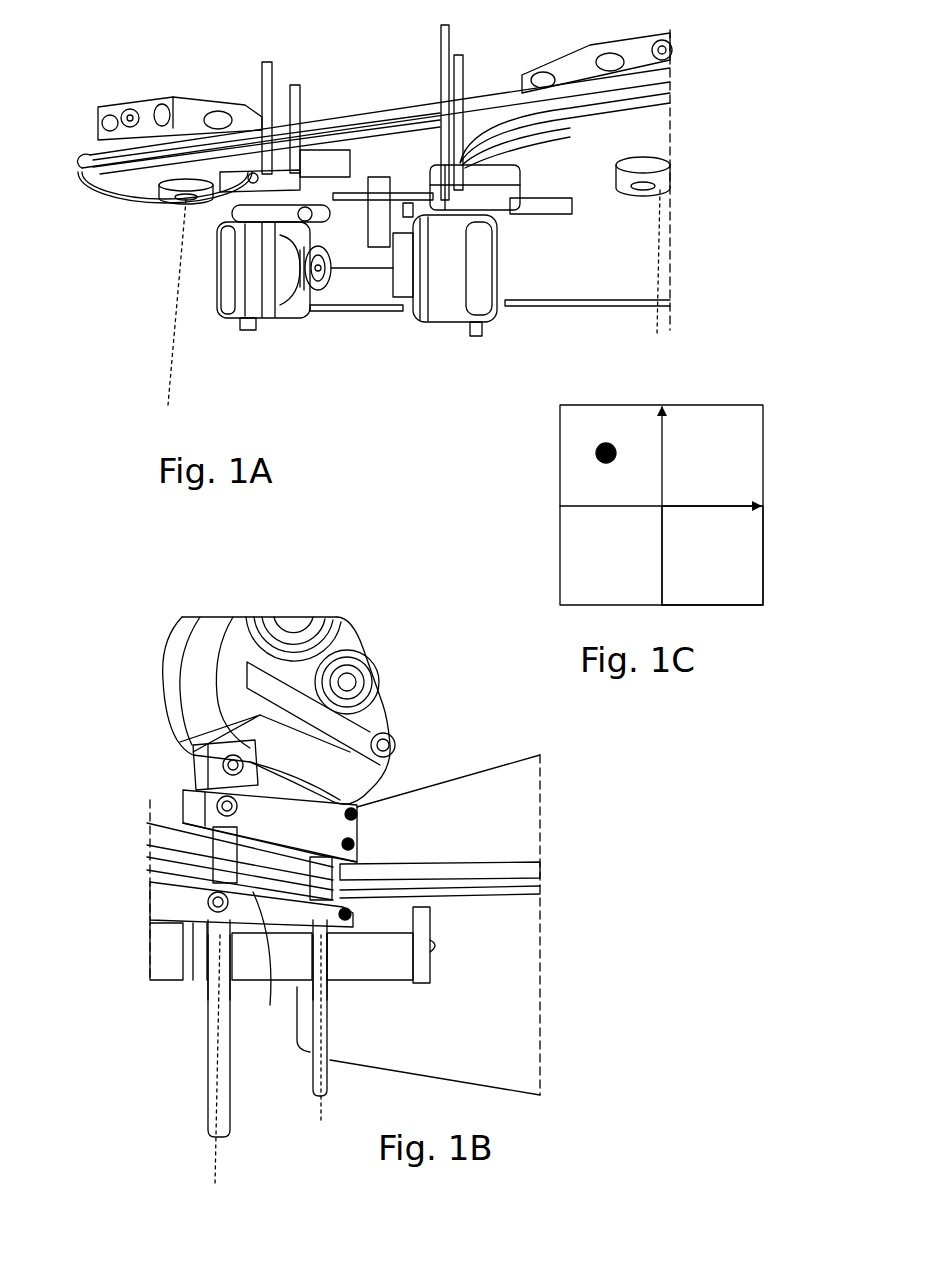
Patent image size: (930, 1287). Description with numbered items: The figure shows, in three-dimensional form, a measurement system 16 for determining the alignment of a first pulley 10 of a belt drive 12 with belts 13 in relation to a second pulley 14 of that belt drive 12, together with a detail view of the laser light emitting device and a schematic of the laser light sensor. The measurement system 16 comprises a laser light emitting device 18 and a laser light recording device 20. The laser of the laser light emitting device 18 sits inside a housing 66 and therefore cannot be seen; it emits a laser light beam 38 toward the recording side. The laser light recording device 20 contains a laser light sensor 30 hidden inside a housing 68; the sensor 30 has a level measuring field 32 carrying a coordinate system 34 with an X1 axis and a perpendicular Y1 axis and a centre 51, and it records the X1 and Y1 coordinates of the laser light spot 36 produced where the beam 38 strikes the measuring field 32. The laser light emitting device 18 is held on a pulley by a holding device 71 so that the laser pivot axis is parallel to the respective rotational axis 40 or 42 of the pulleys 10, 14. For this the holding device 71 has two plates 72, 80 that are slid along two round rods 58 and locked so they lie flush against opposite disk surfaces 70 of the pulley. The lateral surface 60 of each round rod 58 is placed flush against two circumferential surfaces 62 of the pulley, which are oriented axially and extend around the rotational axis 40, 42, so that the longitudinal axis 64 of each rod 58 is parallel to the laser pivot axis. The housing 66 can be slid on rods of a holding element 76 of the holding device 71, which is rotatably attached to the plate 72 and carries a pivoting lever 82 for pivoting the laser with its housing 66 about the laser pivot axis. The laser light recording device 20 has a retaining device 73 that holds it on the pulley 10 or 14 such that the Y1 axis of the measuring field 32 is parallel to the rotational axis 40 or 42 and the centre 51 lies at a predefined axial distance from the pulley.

In FIG. 1A, the belt drive 12 is at (220, 73).
In FIG. 1A, the belts 13 is at (360, 121).
In FIG. 1A, the second pulley 14 is at (642, 130).
In FIG. 1A, the first pulley 10 is at (127, 195).
In FIG. 1A, the disk surfaces 70 is at (108, 188).
In FIG. 1A, the retaining device 73 is at (210, 213).
In FIG. 1A, the rotational axis 40 is at (168, 394).
In FIG. 1A, the laser light recording device 20 is at (218, 314).
In FIG. 1A, the housing 68 is at (253, 287).
In FIG. 1A, the laser light beam 38 is at (342, 290).
In FIG. 1A, the measurement system 16 is at (375, 350).
In FIG. 1A, the laser light emitting device 18 is at (496, 311).
In FIG. 1B, the laser light emitting device 18 is at (157, 667).
In FIG. 1A, the housing 66 is at (448, 308).
In FIG. 1A, the holding device 71 is at (520, 160).
In FIG. 1B, the holding device 71 is at (378, 828).
In FIG. 1A, the pivoting lever 82 is at (527, 210).
In FIG. 1A, the rotational axis 42 is at (660, 320).
In FIG. 1C, the laser light sensor 30 is at (640, 494).
In FIG. 1C, the measuring field 32 is at (735, 458).
In FIG. 1C, the centre 51 is at (662, 506).
In FIG. 1C, the laser light spot 36 is at (597, 458).
In FIG. 1C, the coordinate system 34 is at (687, 557).
In FIG. 1B, the holding element 76 is at (198, 770).
In FIG. 1B, the plate 72 is at (207, 815).
In FIG. 1B, the circumferential surfaces 62 is at (162, 833).
In FIG. 1B, the plate 80 is at (268, 967).
In FIG. 1B, the lateral surface 60 is at (213, 1022).
In FIG. 1B, the round rods 58 is at (217, 1058).
In FIG. 1B, the longitudinal axis 64 is at (212, 1158).